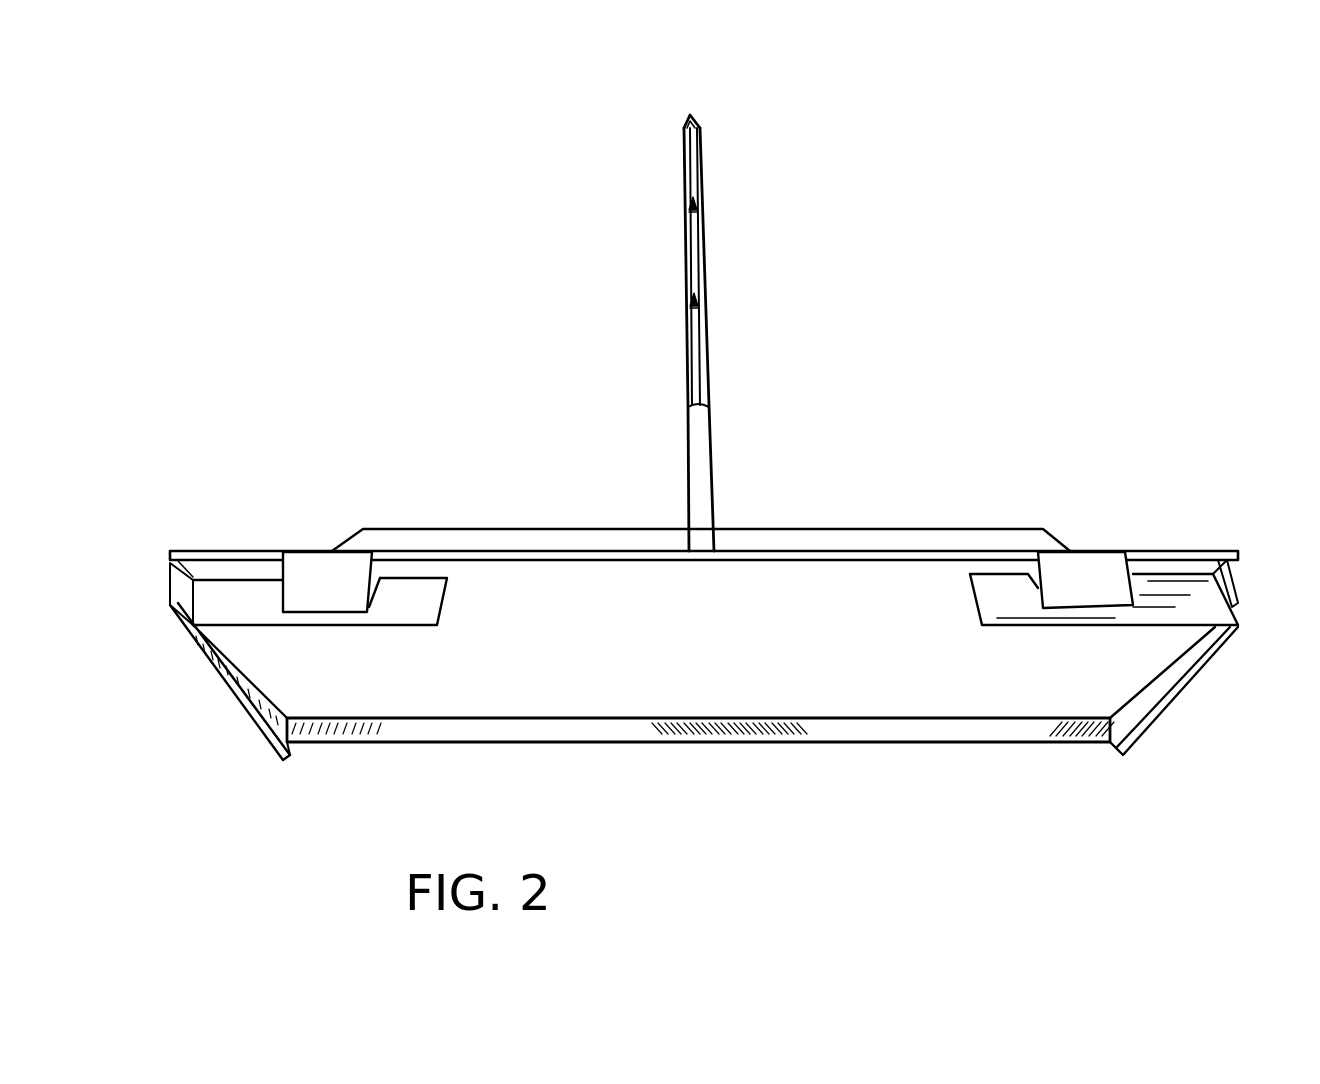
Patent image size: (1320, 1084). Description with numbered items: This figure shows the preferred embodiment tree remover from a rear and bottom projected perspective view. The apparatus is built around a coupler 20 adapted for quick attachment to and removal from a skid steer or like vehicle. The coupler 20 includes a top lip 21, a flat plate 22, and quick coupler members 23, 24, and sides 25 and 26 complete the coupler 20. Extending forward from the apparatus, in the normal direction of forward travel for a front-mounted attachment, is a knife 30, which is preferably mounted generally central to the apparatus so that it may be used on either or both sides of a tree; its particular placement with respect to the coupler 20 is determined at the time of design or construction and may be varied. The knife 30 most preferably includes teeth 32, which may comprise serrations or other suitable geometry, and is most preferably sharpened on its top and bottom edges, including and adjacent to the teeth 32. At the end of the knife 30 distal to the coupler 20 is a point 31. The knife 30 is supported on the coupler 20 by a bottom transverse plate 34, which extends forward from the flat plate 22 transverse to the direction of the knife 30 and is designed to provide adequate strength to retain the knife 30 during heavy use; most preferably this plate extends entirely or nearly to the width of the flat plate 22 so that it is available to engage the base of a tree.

The coupler 20 is at (888, 578).
The top lip 21 is at (895, 728).
The flat plate 22 is at (573, 661).
The quick coupler member 23 is at (257, 586).
The quick coupler member 24 is at (1152, 578).
The side 25 is at (232, 695).
The side 26 is at (1168, 690).
The knife 30 is at (712, 428).
The point 31 is at (690, 115).
The teeth 32 is at (687, 355).
The bottom transverse plate 34 is at (493, 538).